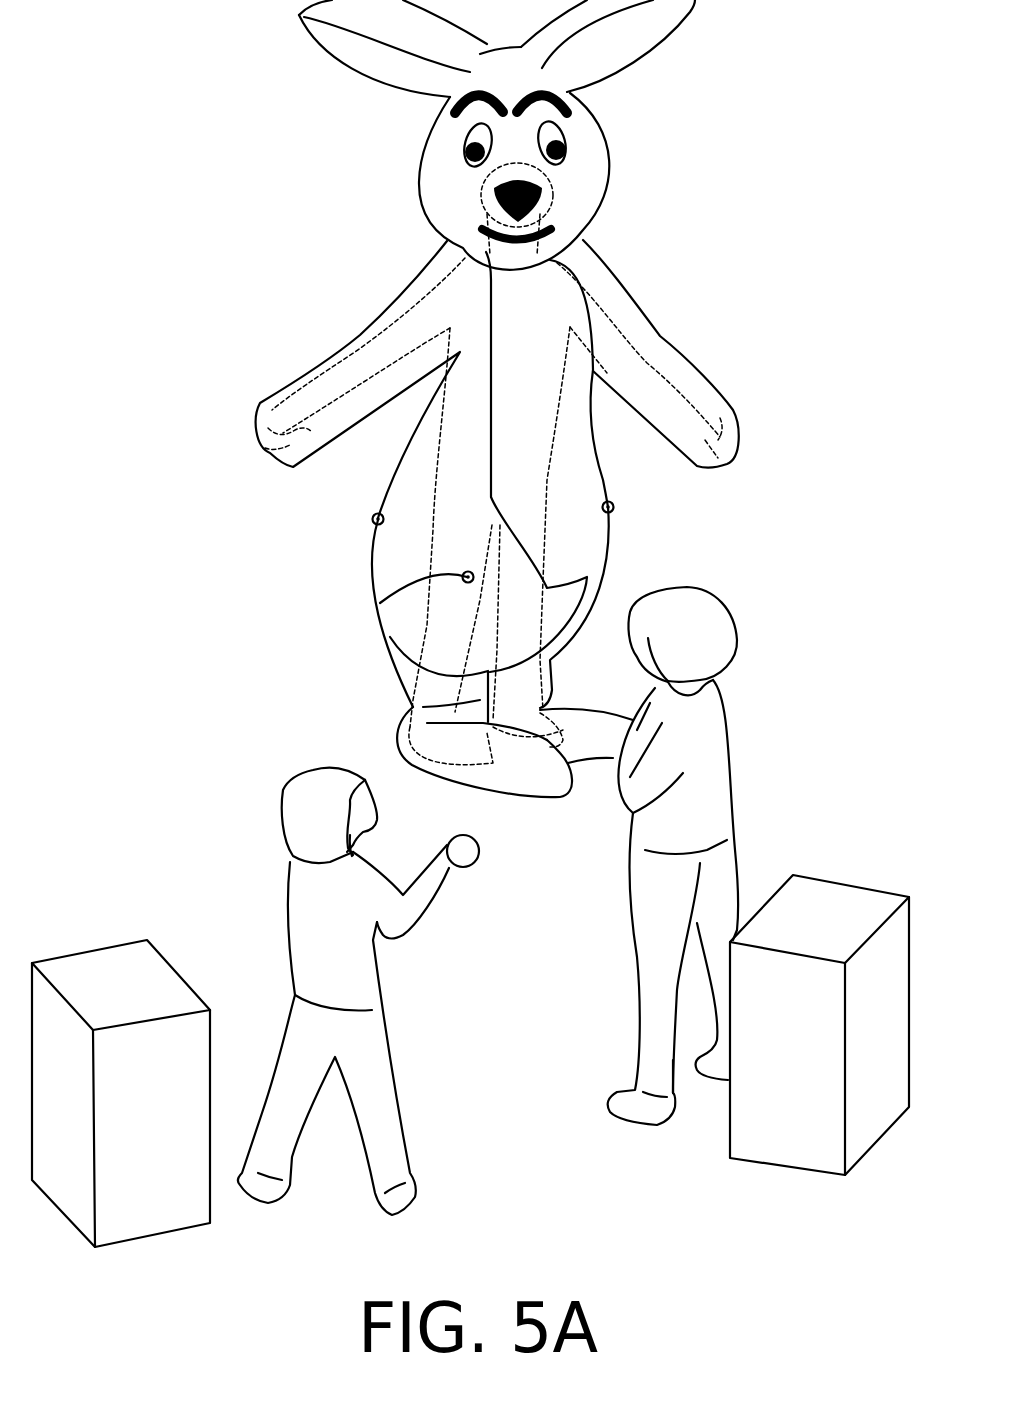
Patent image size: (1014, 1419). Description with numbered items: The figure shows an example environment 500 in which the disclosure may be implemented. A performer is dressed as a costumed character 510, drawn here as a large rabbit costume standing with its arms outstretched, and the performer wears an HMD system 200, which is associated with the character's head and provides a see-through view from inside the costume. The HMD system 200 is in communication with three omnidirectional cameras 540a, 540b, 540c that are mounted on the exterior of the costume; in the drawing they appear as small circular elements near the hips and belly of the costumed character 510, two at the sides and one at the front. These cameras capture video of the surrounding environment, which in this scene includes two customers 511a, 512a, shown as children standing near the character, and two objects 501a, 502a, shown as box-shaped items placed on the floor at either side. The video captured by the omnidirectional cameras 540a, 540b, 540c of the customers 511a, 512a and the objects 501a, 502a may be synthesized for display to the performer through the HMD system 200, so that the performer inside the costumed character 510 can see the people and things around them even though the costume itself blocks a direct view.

The interactive environment 500 is at (152, 66).
The HMD system 200 is at (543, 210).
The costumed character 510 is at (393, 291).
The omnidirectional camera 540a is at (372, 521).
The omnidirectional camera 540b is at (380, 603).
The omnidirectional camera 540c is at (613, 509).
The customer 511a is at (290, 942).
The customer 512a is at (733, 723).
The object 501a is at (93, 967).
The object 502a is at (857, 903).